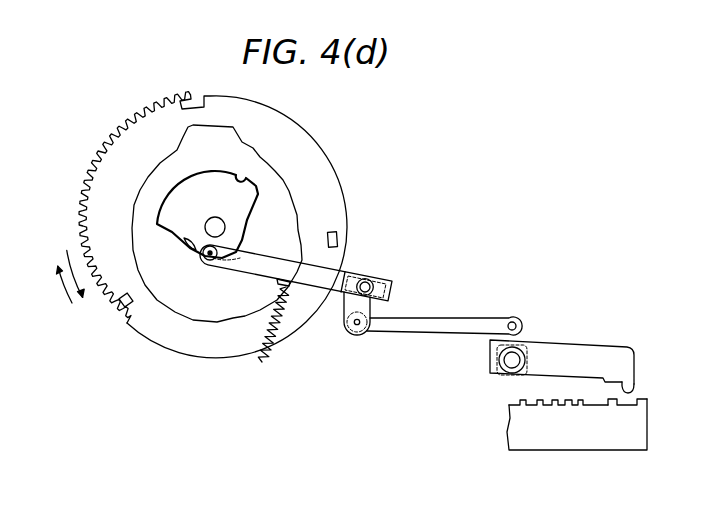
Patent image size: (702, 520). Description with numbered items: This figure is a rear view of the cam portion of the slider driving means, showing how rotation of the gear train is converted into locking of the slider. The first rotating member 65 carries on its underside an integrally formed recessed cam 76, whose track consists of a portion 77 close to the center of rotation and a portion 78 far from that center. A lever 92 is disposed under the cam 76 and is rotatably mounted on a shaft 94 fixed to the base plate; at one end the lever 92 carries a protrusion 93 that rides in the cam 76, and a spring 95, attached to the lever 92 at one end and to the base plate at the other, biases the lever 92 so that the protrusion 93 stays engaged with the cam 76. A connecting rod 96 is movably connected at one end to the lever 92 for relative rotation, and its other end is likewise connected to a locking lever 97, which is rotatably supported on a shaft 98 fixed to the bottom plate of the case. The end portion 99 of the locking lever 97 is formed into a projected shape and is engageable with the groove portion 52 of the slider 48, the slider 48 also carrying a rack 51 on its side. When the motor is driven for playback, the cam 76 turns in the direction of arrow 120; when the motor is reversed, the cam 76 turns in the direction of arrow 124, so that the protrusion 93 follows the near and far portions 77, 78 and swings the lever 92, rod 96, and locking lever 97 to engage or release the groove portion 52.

The slider 48 is at (608, 437).
The rack 51 is at (580, 399).
The groove portion 52 is at (633, 402).
The first rotating member 65 is at (127, 325).
The recessed cam 76 is at (296, 190).
The portion close to the center of rotation 77 is at (190, 249).
The portion far from the center of rotation 78 is at (250, 182).
The lever 92 is at (347, 272).
The protrusion 93 is at (212, 260).
The shaft 94 is at (372, 276).
The spring 95 is at (275, 321).
The connecting rod 96 is at (430, 318).
The locking lever 97 is at (585, 352).
The shaft 98 is at (513, 358).
The end portion 99 is at (631, 388).
The arrow 120 is at (66, 252).
The arrow 124 is at (56, 280).